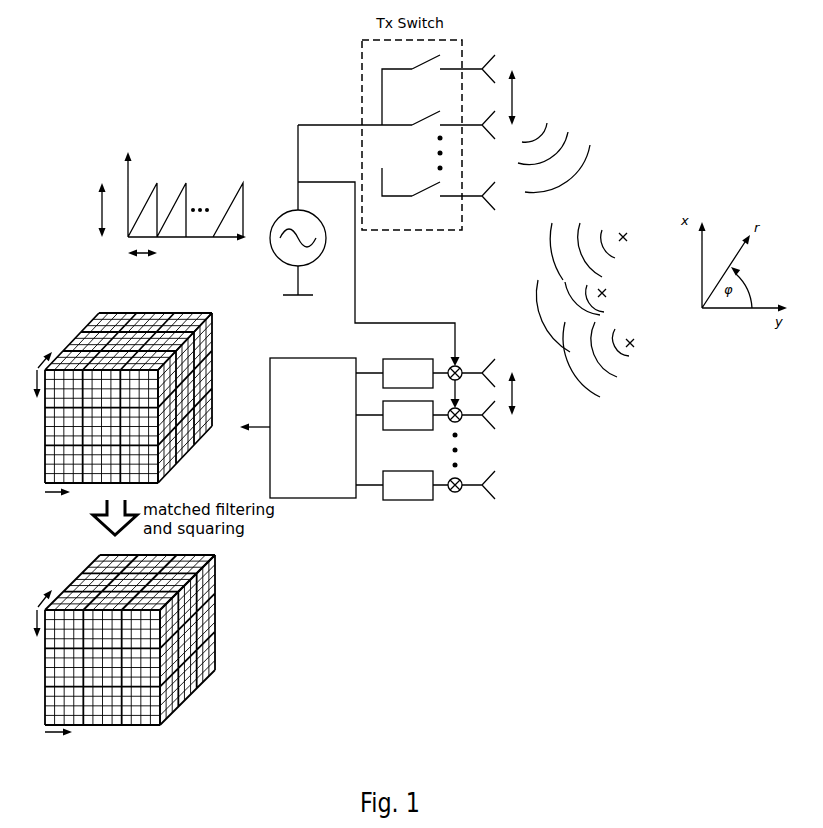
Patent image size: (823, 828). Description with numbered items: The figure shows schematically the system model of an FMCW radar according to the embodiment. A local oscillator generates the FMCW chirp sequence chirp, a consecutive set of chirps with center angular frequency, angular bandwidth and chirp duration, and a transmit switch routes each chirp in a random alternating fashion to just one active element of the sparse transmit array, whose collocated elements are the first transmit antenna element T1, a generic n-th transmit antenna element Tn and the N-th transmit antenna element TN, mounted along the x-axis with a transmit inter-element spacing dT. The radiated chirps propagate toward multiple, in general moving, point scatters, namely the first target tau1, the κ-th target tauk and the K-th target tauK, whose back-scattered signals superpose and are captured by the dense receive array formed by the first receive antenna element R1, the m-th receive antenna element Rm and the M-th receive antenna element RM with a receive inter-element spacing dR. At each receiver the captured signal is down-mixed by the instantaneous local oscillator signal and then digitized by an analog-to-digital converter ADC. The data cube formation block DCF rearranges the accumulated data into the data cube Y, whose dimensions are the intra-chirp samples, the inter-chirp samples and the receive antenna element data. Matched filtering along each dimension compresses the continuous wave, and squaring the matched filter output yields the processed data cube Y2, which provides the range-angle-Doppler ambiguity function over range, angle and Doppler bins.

The first transmit antenna element T1 is at (438, 77).
The n-th transmit antenna element Tn is at (396, 116).
The N-th transmit antenna element TN is at (438, 185).
The transmit inter-element spacing dT is at (524, 97).
The first receive antenna element R1 is at (471, 363).
The m-th receive antenna element Rm is at (471, 406).
The M-th receive antenna element RM is at (471, 476).
The receive inter-element spacing dR is at (523, 393).
The analog-to-digital converter ADC is at (402, 429).
The data cube formation block DCF is at (298, 428).
The first point scatter target tau1 is at (595, 246).
The κ-th point scatter target tauk is at (580, 313).
The K-th point scatter target tauK is at (612, 359).
The FMCW chirp sequence chirp is at (168, 209).
The data cube Y is at (115, 399).
The matched filter output data cube Ỹ Y2 is at (111, 654).